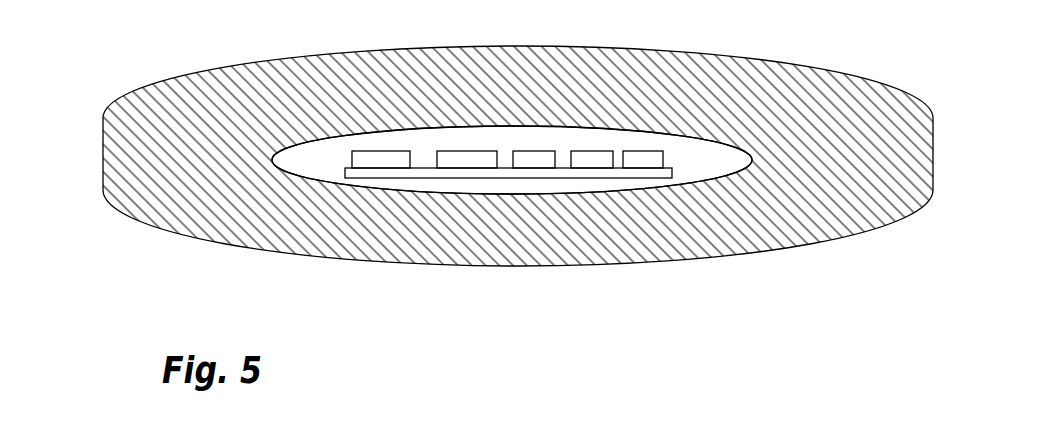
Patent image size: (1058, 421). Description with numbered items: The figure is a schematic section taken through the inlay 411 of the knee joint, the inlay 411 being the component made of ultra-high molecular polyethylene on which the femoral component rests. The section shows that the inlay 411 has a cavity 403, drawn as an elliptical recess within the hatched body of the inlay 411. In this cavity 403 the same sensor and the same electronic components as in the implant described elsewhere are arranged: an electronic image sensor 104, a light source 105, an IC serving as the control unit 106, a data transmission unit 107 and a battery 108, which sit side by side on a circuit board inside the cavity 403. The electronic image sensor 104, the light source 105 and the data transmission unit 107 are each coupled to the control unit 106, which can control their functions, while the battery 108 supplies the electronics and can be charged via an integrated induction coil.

The electronic image sensor 104 is at (375, 161).
The light source 105 is at (467, 161).
The control unit 106 is at (528, 161).
The data transmission unit 107 is at (590, 161).
The battery 108 is at (643, 161).
The cavity 403 is at (298, 161).
The inlay 411 is at (305, 229).